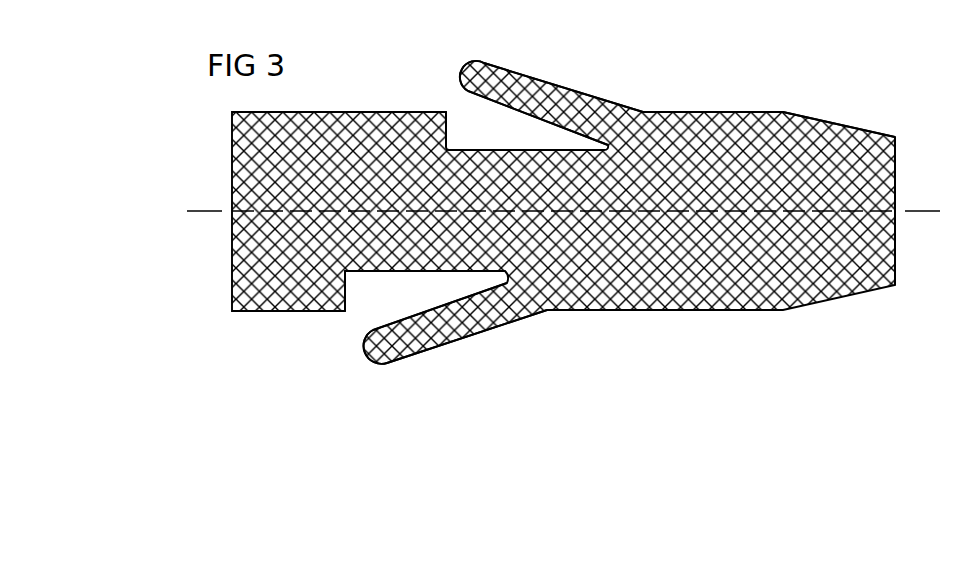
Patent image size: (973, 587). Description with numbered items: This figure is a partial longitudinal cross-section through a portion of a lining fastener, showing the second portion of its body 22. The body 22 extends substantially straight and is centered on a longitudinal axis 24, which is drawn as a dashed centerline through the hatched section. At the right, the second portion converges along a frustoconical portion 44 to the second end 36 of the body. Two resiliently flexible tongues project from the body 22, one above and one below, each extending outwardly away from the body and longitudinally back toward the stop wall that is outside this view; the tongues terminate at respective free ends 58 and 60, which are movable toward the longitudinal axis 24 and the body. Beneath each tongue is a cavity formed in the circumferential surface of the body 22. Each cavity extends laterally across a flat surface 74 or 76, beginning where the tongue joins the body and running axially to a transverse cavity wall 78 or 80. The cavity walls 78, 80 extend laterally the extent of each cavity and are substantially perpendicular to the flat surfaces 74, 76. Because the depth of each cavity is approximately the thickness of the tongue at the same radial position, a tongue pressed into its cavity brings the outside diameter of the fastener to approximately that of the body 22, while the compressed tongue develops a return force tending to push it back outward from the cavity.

The body 22 is at (354, 111).
The longitudinal axis 24 is at (197, 196).
The second end 36 is at (897, 233).
The frustoconical portion 44 is at (843, 125).
The end of first tongue 58 is at (371, 346).
The end of second tongue 60 is at (467, 84).
The flat surface 74 is at (467, 271).
The flat surface 76 is at (527, 150).
The first transverse cavity wall 78 is at (345, 295).
The second transverse cavity wall 80 is at (454, 120).